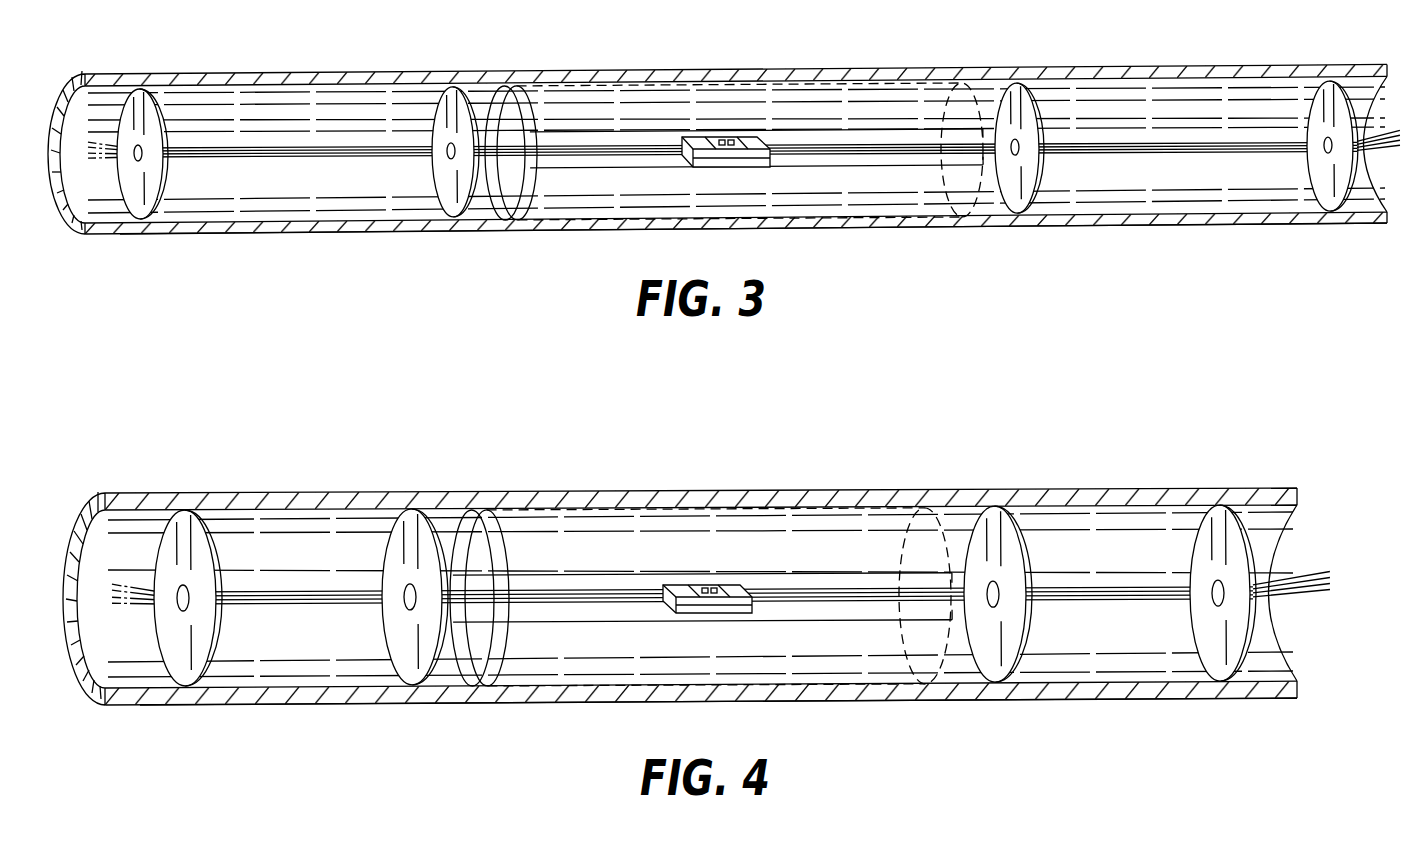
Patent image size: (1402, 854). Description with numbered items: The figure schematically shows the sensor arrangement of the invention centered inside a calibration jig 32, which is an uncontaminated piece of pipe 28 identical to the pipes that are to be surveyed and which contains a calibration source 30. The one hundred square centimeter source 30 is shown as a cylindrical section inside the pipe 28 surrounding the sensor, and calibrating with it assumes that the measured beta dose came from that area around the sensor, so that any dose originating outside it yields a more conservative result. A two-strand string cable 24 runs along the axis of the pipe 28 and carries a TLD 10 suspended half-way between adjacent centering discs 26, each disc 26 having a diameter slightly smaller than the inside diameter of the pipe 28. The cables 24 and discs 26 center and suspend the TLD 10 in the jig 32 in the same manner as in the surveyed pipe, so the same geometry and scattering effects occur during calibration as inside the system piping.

In FIG. 3, the TLD 10 is at (712, 168).
In FIG. 4, the TLD 10 is at (688, 615).
In FIG. 3, the cable 24 is at (382, 147).
In FIG. 4, the cable 24 is at (298, 592).
In FIG. 3, the centering disc 26 is at (165, 169).
In FIG. 4, the centering disc 26 is at (163, 627).
In FIG. 3, the pipe 28 is at (258, 72).
In FIG. 4, the pipe 28 is at (287, 493).
In FIG. 3, the source 30 is at (755, 100).
In FIG. 4, the source 30 is at (757, 530).
In FIG. 3, the jig 32 is at (268, 248).
In FIG. 4, the jig 32 is at (296, 712).